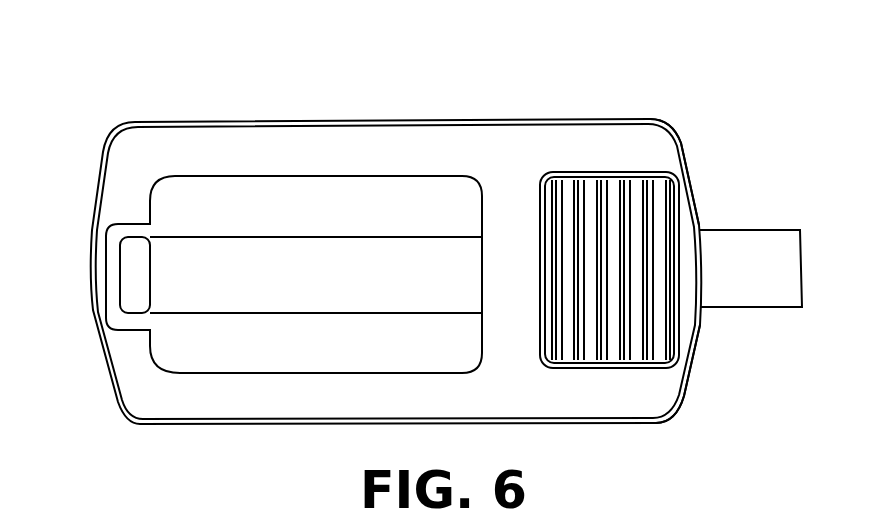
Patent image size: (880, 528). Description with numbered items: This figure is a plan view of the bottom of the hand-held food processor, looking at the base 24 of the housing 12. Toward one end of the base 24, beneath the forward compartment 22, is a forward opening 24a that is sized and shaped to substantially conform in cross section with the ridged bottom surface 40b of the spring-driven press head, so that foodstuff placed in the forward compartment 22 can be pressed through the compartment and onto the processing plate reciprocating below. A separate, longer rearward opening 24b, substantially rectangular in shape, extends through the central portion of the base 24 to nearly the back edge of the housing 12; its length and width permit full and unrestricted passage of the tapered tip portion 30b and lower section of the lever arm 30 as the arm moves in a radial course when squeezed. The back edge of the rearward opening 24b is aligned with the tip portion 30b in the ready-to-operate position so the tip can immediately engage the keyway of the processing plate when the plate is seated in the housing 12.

The housing 12 is at (413, 121).
The forward compartment 22 is at (680, 138).
The base 24 is at (677, 410).
The forward opening 24a is at (570, 172).
The rearward opening 24b is at (203, 176).
The lever arm 30 is at (760, 230).
The tapered tip portion 30b is at (137, 314).
The ridged bottom surface 40b is at (658, 340).